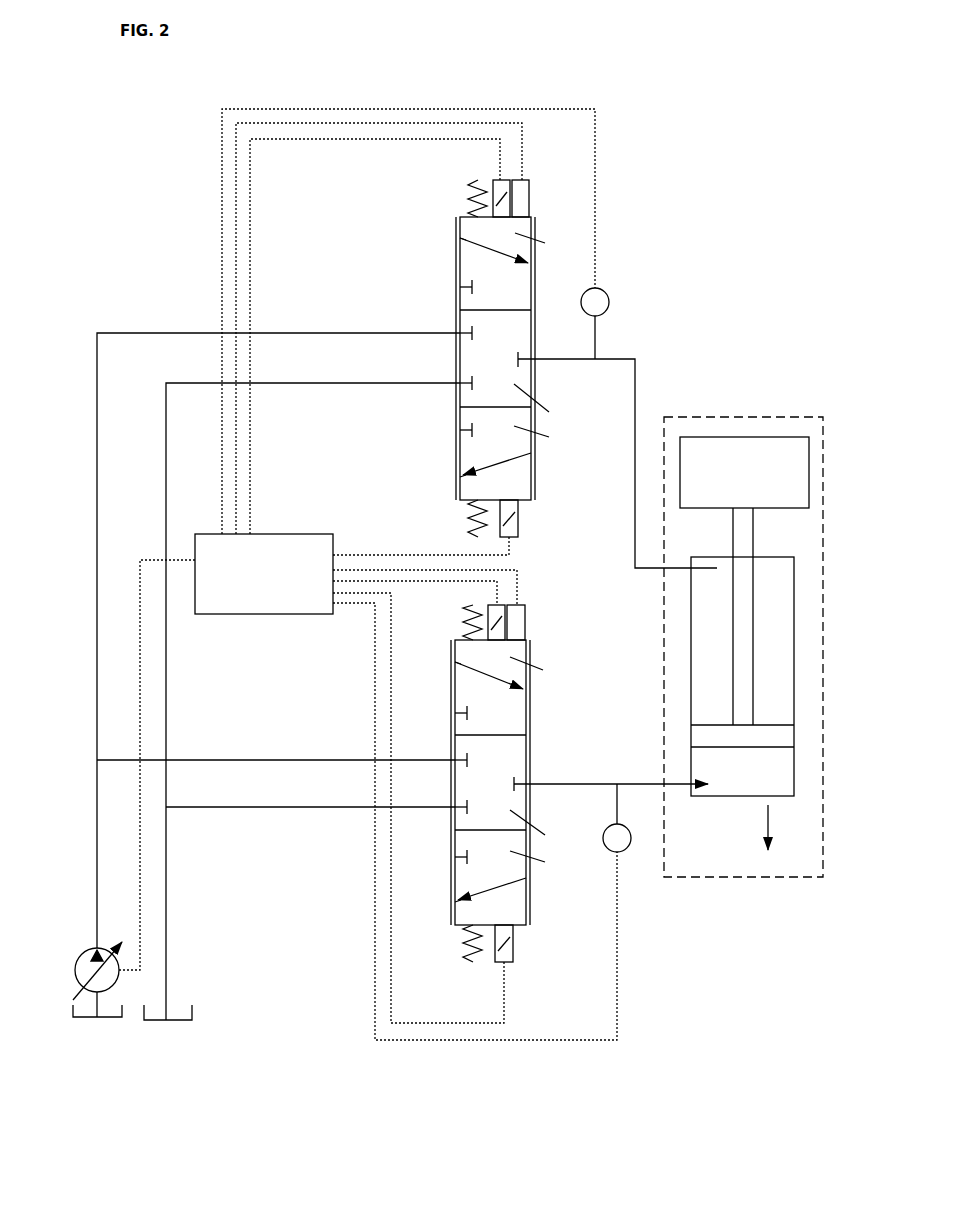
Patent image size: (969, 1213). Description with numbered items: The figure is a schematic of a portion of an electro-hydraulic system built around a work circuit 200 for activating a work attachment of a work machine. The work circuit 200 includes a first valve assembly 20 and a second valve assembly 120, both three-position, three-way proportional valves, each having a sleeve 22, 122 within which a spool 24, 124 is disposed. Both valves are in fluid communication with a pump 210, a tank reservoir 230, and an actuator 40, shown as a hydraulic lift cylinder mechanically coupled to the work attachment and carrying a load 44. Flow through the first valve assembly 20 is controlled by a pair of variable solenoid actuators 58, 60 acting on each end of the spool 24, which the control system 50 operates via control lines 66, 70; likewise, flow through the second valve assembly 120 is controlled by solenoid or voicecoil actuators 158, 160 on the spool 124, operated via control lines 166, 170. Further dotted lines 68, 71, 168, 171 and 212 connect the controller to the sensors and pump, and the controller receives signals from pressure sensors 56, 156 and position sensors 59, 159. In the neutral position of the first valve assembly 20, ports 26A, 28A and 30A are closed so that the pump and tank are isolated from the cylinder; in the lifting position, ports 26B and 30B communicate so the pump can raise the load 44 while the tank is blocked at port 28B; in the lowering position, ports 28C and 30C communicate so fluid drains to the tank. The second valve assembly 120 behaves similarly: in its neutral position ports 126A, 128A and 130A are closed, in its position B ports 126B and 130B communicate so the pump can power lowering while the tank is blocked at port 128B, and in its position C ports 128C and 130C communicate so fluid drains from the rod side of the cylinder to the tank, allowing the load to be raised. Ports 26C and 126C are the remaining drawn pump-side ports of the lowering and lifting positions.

The work circuit 200 is at (208, 212).
The control system 50 is at (264, 574).
The signal line to pressure sensor 168 is at (540, 106).
The signal line to LVDT 171 is at (524, 153).
The control line 166 is at (372, 142).
The control line 170 is at (358, 553).
The signal line to LVDT 71 is at (519, 580).
The control line 66 is at (443, 583).
The control line 70 is at (460, 1022).
The signal line to pressure sensor 68 is at (578, 1038).
The pump control signal line 212 is at (140, 556).
The pump 210 is at (99, 946).
The tank reservoir 230 is at (196, 1008).
The second valve assembly 120 is at (458, 190).
The sleeve 122 is at (457, 497).
The spool 124 is at (461, 501).
The variable solenoid or voicecoil actuator 158 is at (492, 181).
The sensor 159 is at (528, 180).
The variable solenoid or voicecoil actuator 160 is at (519, 528).
The port 126A is at (458, 338).
The port 126B is at (460, 238).
The port 126C is at (458, 433).
The port 128A is at (458, 386).
The port 128B is at (460, 286).
The port 128C is at (462, 477).
The port 130A is at (533, 361).
The port 130B is at (526, 262).
The port 130C is at (533, 455).
The sensor 156 is at (605, 290).
The first valve assembly 20 is at (441, 746).
The sleeve 22 is at (452, 920).
The spool 24 is at (456, 926).
The variable solenoid actuator 58 is at (487, 605).
The sensor 59 is at (523, 605).
The variable solenoid actuator 60 is at (513, 963).
The port 26A is at (453, 765).
The port 26B is at (455, 662).
The port 26C is at (453, 858).
The port 28A is at (453, 811).
The port 28B is at (455, 712).
The port 28C is at (457, 902).
The port 30A is at (528, 786).
The port 30B is at (522, 688).
The port 30C is at (528, 880).
The sensor 56 is at (627, 830).
The actuator 40 is at (707, 415).
The load 44 is at (706, 510).